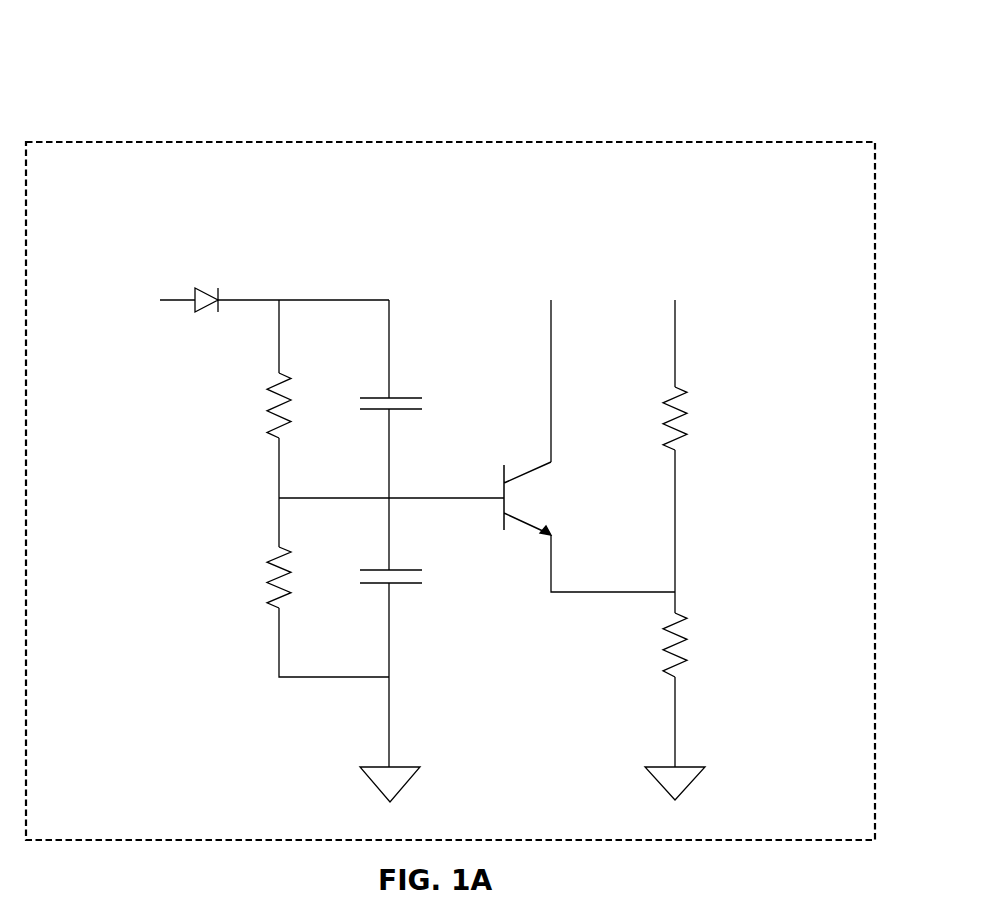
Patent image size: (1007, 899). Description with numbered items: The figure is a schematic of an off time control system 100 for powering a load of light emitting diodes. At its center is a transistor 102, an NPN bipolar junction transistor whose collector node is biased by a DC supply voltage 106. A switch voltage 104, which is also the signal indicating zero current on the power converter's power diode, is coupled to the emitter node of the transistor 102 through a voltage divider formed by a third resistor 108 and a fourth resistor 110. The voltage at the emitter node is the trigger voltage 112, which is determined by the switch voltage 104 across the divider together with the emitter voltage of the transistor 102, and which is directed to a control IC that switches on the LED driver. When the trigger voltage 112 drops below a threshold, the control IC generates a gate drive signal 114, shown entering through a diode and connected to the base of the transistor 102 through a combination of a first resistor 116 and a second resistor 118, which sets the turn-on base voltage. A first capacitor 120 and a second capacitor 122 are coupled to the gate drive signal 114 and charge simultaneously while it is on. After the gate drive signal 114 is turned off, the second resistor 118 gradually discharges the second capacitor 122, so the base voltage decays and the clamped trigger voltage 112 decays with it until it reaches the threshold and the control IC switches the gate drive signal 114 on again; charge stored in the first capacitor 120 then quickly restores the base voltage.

The off time control system 100 is at (683, 67).
The transistor T 102 is at (563, 487).
The switch voltage VSW 104 is at (692, 271).
The DC voltage Vcc 106 is at (562, 269).
The resistor R3 108 is at (727, 413).
The resistor R4 110 is at (718, 638).
The trigger voltage ZCD 112 is at (733, 529).
The gate drive signal GD 114 is at (147, 273).
The resistor R1 116 is at (213, 398).
The resistor R2 118 is at (212, 562).
The capacitor C1 120 is at (453, 394).
The capacitor C2 122 is at (460, 578).